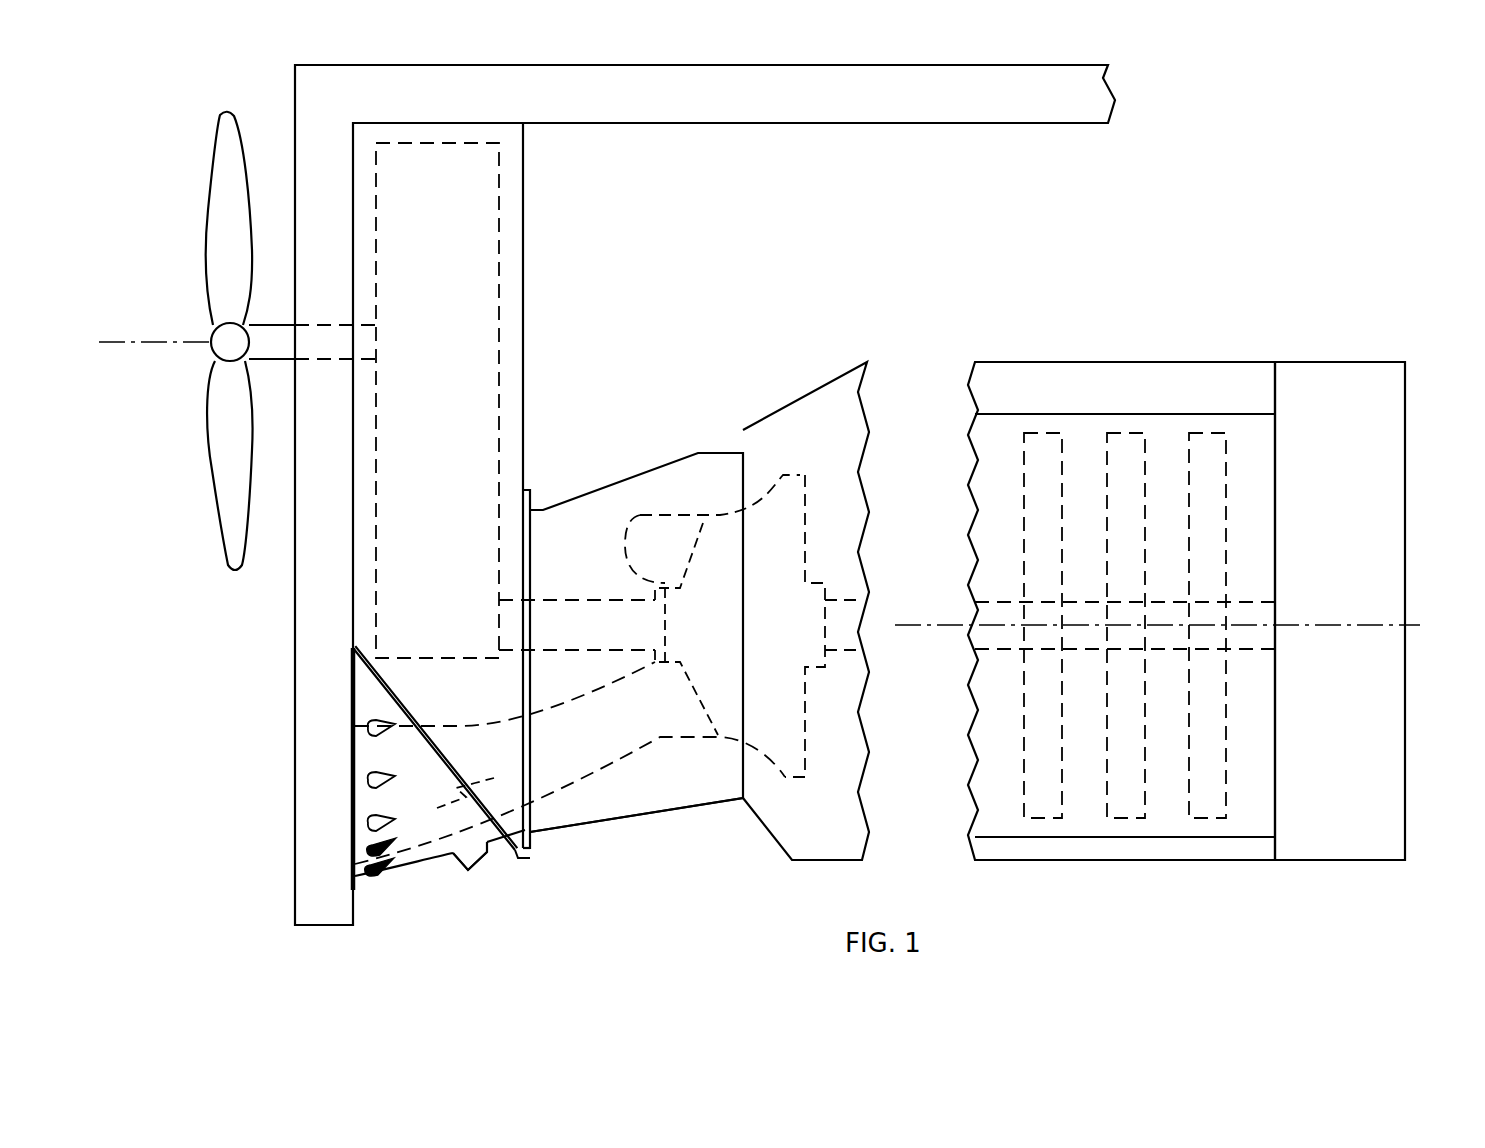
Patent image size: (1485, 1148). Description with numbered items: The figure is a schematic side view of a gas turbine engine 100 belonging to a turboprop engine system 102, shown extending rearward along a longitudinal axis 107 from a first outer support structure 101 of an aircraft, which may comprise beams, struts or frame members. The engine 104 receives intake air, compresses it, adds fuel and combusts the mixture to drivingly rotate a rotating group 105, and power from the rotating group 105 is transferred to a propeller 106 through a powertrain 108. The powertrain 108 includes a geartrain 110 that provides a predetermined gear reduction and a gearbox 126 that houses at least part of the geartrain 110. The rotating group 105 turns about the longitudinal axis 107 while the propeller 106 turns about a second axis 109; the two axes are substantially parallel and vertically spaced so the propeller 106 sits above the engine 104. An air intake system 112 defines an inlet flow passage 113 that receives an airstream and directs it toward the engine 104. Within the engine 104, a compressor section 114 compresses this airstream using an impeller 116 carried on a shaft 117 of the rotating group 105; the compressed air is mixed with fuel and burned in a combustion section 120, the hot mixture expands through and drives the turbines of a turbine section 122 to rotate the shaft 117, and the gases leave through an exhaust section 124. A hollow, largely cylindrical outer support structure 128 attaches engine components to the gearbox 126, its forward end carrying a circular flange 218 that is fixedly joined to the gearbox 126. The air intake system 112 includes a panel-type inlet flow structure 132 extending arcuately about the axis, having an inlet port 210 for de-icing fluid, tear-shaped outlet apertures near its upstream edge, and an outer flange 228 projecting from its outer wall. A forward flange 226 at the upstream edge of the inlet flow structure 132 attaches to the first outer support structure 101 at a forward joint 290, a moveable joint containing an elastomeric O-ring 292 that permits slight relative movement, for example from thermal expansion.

The gas turbine engine 100 is at (165, 135).
The first outer support structure 101 is at (329, 647).
The turboprop engine system 102 is at (668, 311).
The engine 104 is at (1403, 322).
The rotating group 105 is at (796, 512).
The propeller 106 is at (208, 462).
The longitudinal axis 107 is at (1425, 625).
The powertrain 108 is at (496, 497).
The second axis 109 is at (152, 340).
The geartrain 110 is at (504, 373).
The air intake system 112 is at (496, 860).
The inlet flow passage 113 is at (446, 801).
The compressor section 114 is at (873, 878).
The impeller 116 is at (708, 538).
The shaft 117 is at (548, 600).
The combustion section 120 is at (1112, 374).
The turbine section 122 is at (1020, 812).
The exhaust section 124 is at (1343, 842).
The gearbox 126 is at (527, 213).
The outer support structure 128 is at (625, 830).
The inlet flow structure 132 is at (426, 870).
The inlet port 210 is at (468, 866).
The circular flange 218 is at (533, 843).
The forward flange 226 is at (357, 885).
The outer flange 228 is at (520, 858).
The forward joint 290 is at (342, 759).
The O-ring 292 is at (350, 808).